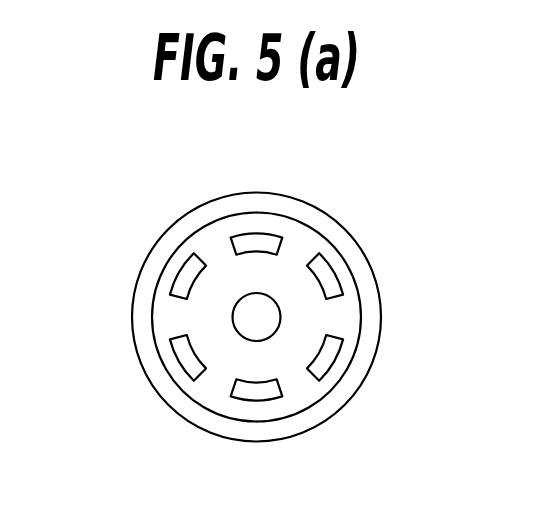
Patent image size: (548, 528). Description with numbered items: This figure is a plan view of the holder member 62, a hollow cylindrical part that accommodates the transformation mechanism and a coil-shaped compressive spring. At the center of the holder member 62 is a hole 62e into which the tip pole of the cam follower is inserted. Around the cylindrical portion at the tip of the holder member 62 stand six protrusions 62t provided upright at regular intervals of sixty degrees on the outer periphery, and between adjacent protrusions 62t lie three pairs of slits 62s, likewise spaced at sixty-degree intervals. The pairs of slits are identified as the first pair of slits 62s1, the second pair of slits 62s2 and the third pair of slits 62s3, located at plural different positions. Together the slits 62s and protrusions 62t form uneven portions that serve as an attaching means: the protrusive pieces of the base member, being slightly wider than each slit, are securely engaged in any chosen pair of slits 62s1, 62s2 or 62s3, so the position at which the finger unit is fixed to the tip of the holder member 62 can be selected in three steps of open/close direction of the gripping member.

The holder member 62 is at (374, 360).
The slits 62s is at (295, 237).
The first pair of slits 62s1 is at (303, 243).
The second pair of slits 62s2 is at (210, 235).
The third pair of slits 62s3 is at (348, 318).
The protrusions 62t is at (332, 275).
The hole 62e is at (231, 316).